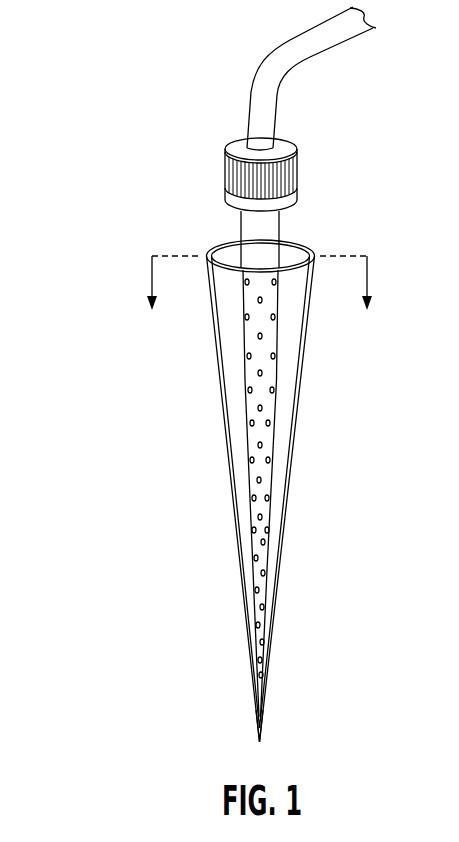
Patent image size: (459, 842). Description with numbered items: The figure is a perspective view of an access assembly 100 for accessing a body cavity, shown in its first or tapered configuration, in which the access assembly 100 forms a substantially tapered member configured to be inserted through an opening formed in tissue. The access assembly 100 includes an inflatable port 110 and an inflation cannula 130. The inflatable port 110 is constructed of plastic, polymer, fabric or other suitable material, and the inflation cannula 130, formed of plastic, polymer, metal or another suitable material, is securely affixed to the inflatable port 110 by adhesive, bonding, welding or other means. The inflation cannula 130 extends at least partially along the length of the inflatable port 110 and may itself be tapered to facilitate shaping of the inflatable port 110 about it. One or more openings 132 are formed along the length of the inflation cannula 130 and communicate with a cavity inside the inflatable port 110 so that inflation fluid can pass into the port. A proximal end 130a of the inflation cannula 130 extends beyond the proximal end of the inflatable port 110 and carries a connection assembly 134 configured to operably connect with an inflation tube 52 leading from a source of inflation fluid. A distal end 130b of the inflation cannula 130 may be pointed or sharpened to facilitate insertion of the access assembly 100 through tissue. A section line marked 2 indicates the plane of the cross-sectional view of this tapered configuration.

The access assembly 100 is at (108, 167).
The inflation tube 52 is at (270, 70).
The connection assembly 134 is at (290, 177).
The proximal end 130a is at (272, 232).
The inflatable port 110 is at (230, 345).
The inflation cannula 130 is at (270, 448).
The openings 132 is at (252, 460).
The distal end 130b is at (265, 703).
The section line for FIG. 2 is at (260, 298).